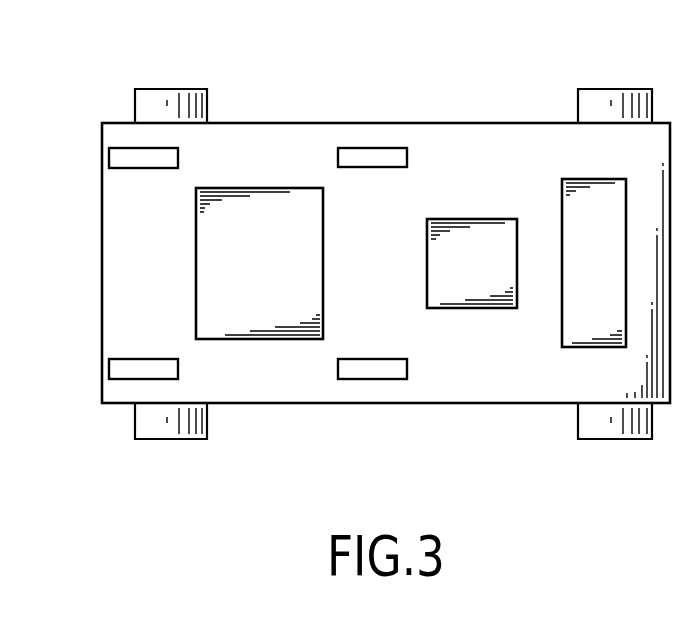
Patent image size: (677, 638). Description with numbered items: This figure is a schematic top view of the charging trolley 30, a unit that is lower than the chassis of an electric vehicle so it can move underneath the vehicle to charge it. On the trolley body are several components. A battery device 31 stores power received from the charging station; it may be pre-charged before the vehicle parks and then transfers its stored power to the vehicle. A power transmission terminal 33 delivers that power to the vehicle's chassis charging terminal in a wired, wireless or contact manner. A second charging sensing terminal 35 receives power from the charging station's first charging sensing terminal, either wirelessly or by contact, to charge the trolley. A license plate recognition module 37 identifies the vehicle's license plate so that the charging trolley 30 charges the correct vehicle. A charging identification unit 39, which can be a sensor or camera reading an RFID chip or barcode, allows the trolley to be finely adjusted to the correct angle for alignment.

The charging trolley 30 is at (295, 77).
The battery device 31 is at (441, 267).
The power transmission terminal 33 is at (206, 268).
The second charging sensing terminal 35 is at (568, 195).
The license plate recognition module 37 is at (118, 158).
The charging identification unit 39 is at (366, 158).